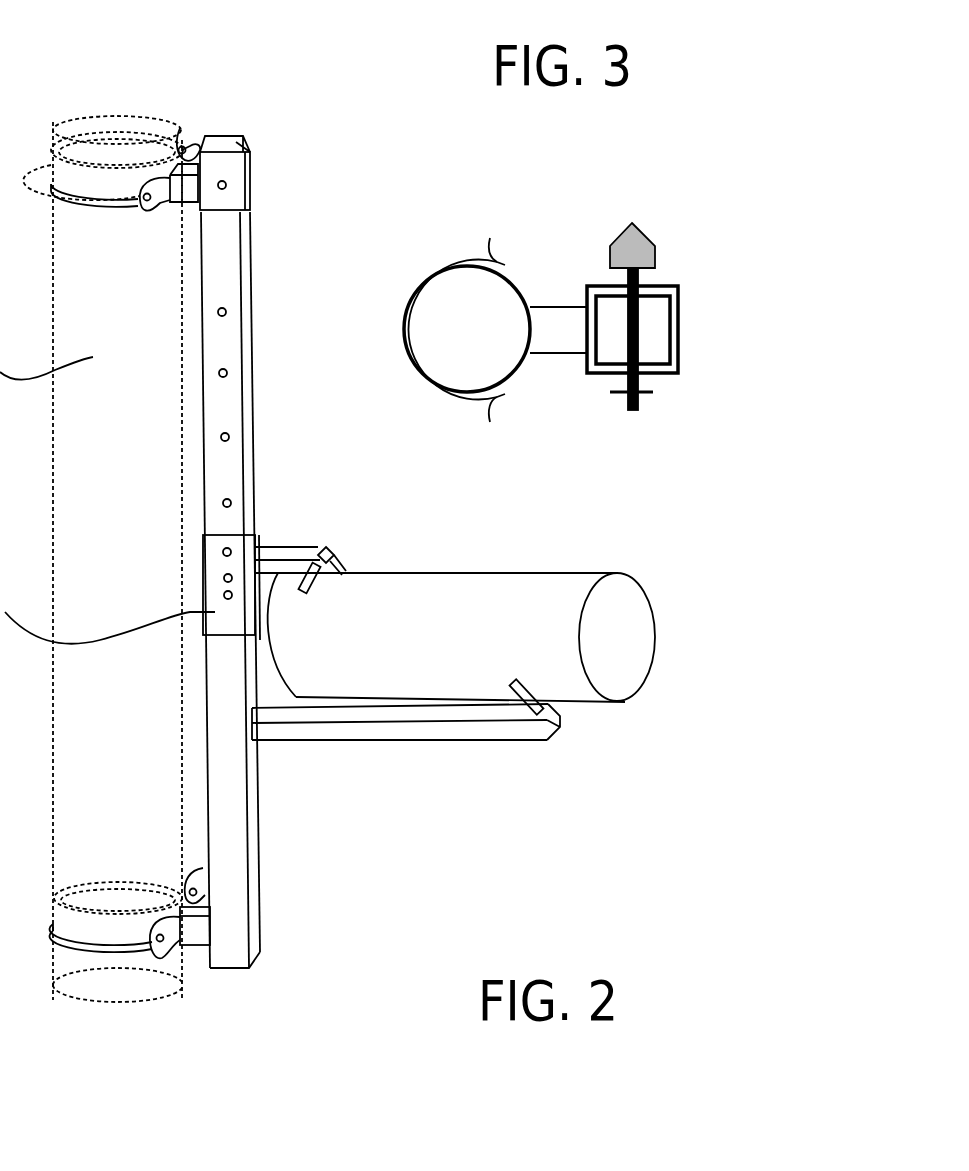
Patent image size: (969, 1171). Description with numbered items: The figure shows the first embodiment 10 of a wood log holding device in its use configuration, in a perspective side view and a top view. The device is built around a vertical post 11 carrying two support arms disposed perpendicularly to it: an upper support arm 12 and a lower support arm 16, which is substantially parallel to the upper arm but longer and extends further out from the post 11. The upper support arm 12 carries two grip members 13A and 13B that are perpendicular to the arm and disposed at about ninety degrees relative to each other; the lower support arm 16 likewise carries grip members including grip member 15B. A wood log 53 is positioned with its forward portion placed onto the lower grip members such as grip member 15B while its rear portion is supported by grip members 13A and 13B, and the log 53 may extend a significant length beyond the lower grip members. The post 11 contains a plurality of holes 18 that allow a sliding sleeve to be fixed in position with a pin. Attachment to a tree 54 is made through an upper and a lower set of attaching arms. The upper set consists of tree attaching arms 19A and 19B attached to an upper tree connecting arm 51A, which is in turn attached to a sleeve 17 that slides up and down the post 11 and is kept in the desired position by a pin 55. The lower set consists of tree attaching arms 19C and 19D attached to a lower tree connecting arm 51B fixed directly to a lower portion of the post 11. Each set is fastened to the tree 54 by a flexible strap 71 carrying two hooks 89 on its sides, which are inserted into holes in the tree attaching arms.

In FIG. 2, the first embodiment 10 is at (360, 96).
In FIG. 2, the post 11 is at (238, 412).
In FIG. 3, the post 11 is at (600, 287).
In FIG. 2, the upper support arm 12 is at (280, 548).
In FIG. 2, the grip member 13A is at (338, 567).
In FIG. 2, the grip member 13B is at (322, 585).
In FIG. 2, the grip member 15B is at (517, 725).
In FIG. 2, the lower support arm 16 is at (417, 730).
In FIG. 2, the sleeve 17 is at (232, 183).
In FIG. 3, the sleeve 17 is at (667, 377).
In FIG. 2, the holes 18 is at (228, 314).
In FIG. 2, the tree attaching arm 19A is at (153, 180).
In FIG. 3, the tree attaching arm 19A is at (497, 425).
In FIG. 2, the tree attaching arm 19B is at (180, 128).
In FIG. 3, the tree attaching arm 19B is at (493, 252).
In FIG. 2, the tree attaching arm 19C is at (175, 945).
In FIG. 2, the tree attaching arm 19D is at (196, 880).
In FIG. 2, the upper tree connecting arm 51A is at (190, 190).
In FIG. 2, the lower tree connecting arm 51B is at (202, 935).
In FIG. 2, the wood log 53 is at (630, 676).
In FIG. 3, the tree 54 is at (453, 332).
In FIG. 3, the pin 55 is at (632, 235).
In FIG. 2, the flexible strap 71 is at (88, 199).
In FIG. 2, the hooks 89 is at (168, 960).